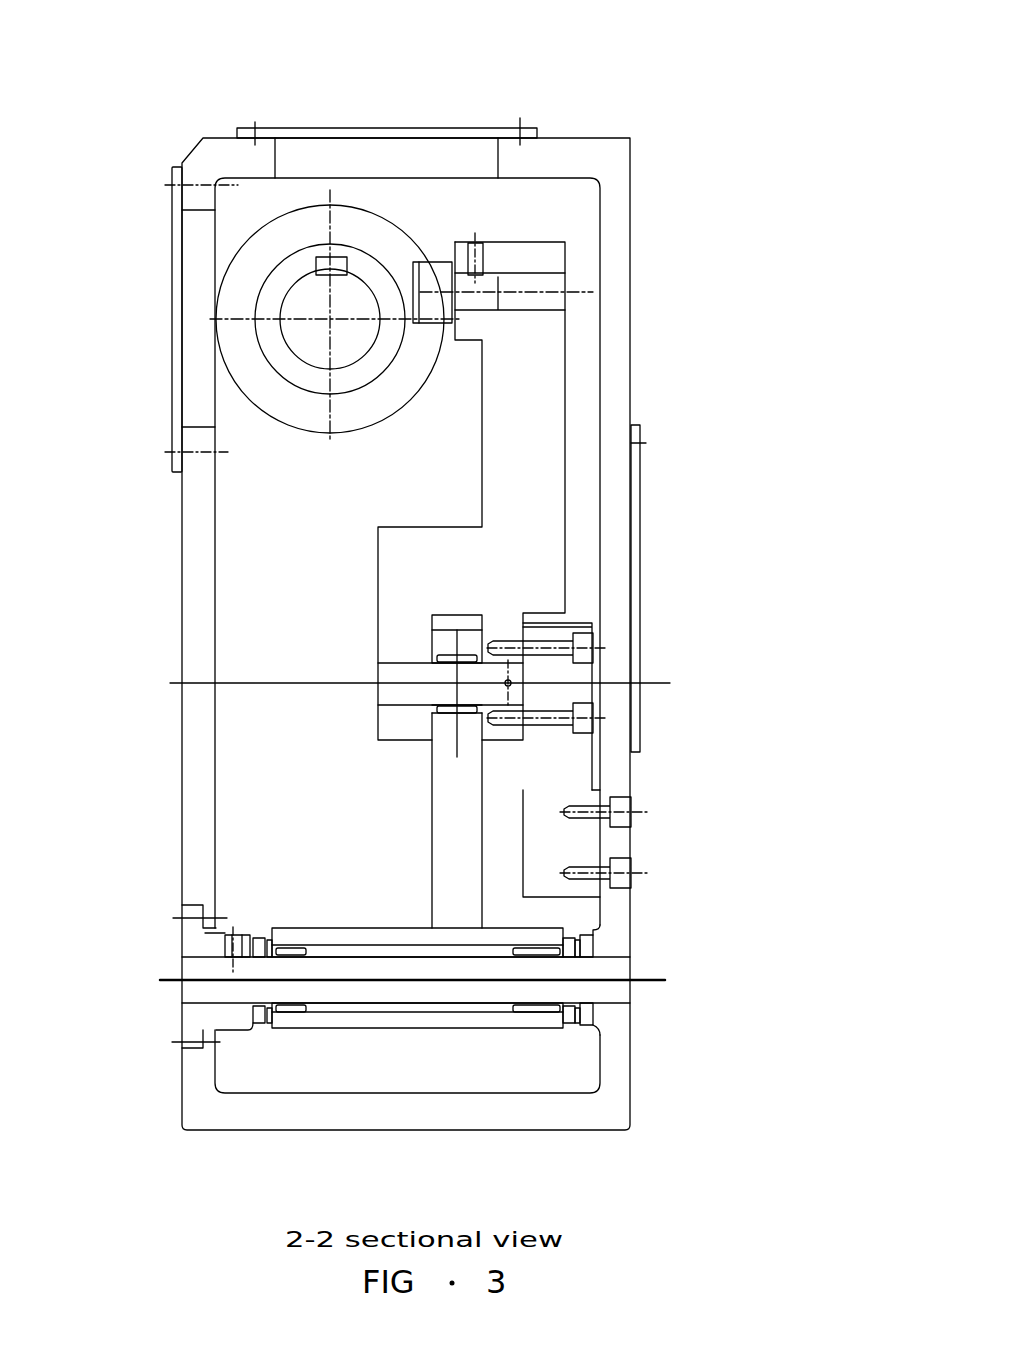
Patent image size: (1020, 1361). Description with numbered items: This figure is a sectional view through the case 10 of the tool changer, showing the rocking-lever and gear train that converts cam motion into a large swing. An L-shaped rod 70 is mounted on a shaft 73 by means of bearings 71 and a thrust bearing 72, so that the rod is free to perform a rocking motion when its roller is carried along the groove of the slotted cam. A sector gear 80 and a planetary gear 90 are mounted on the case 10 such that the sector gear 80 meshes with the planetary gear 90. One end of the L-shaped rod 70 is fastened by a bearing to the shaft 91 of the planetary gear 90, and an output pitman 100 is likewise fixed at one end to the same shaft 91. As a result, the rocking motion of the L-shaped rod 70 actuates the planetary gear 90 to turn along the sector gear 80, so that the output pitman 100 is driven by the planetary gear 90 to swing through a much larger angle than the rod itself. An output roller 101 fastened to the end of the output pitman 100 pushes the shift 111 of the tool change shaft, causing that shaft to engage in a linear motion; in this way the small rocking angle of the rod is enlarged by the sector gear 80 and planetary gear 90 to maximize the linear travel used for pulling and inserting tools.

The case 10 is at (622, 773).
The L-shaped rod 70 is at (455, 820).
The bearings 71 is at (283, 1012).
The thrust bearing 72 is at (587, 1013).
The shaft 73 is at (590, 968).
The sector gear 80 is at (557, 787).
The planetary gear 90 is at (565, 673).
The shaft of the planetary gear 91 is at (478, 675).
The output pitman 100 is at (528, 450).
The output roller 101 is at (440, 262).
The shift 111 is at (357, 222).